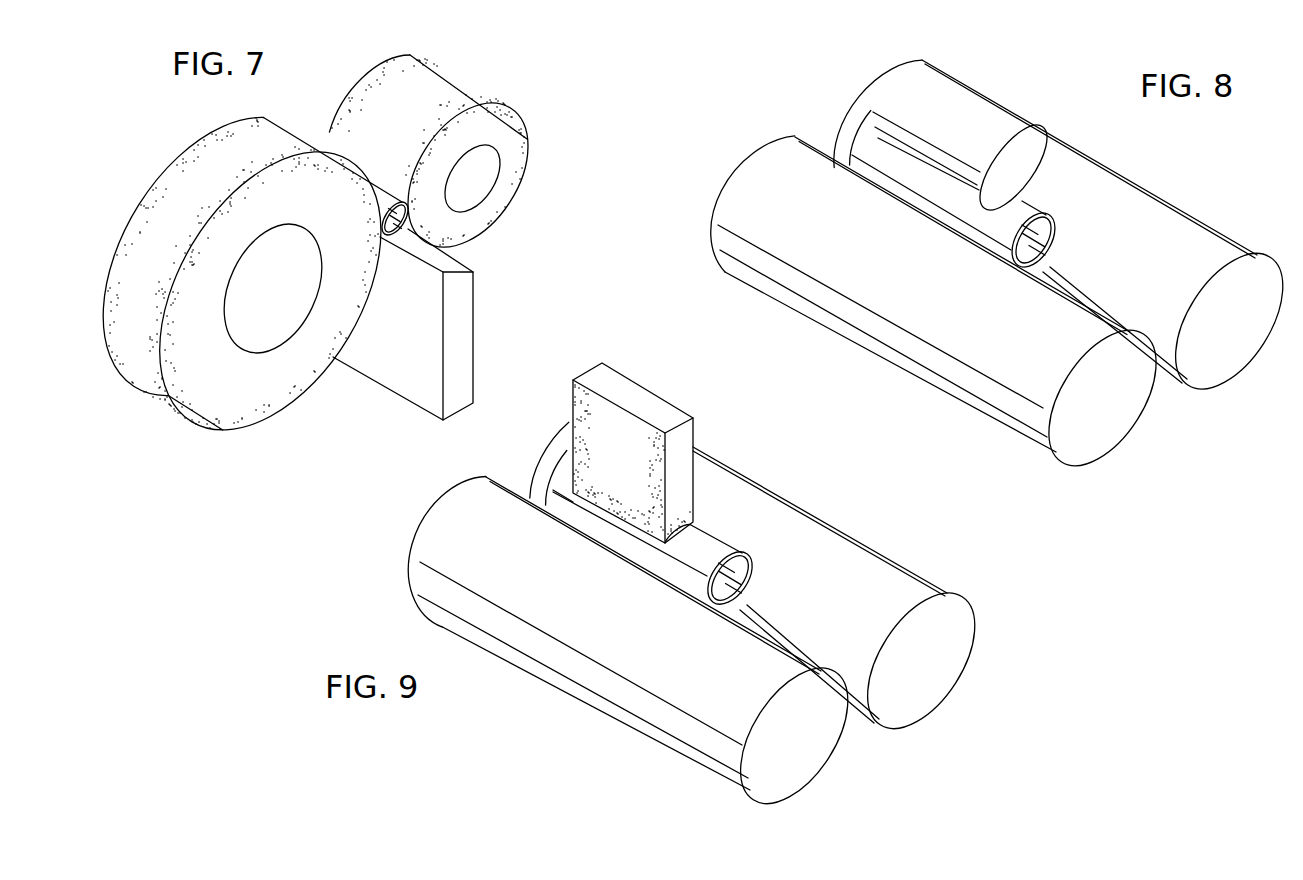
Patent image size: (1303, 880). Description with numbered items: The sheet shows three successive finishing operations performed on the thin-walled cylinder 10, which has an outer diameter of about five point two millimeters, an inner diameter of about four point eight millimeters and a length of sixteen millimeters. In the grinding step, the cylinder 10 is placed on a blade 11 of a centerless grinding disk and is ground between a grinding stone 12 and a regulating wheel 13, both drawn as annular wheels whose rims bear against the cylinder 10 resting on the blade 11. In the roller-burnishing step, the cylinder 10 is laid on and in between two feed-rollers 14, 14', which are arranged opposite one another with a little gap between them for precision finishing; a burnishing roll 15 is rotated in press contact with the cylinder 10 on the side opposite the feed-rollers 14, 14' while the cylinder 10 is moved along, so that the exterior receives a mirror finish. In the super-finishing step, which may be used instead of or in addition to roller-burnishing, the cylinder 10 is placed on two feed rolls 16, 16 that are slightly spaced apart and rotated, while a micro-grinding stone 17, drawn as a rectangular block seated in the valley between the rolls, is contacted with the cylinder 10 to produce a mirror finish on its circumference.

In FIG. 7, the cylinder 10 is at (388, 192).
In FIG. 8, the cylinder 10 is at (1030, 212).
In FIG. 9, the cylinder 10 is at (710, 550).
In FIG. 7, the blade 11 is at (467, 310).
In FIG. 7, the grinding stone 12 is at (148, 208).
In FIG. 7, the regulating wheel 13 is at (463, 93).
In FIG. 8, the feed-roller 14 is at (1076, 240).
In FIG. 8, the feed-roller 14' is at (944, 310).
In FIG. 8, the burnishing roll 15 is at (987, 124).
In FIG. 9, the feed roll 16 is at (813, 765).
In FIG. 9, the micro-grinding stone 17 is at (648, 400).